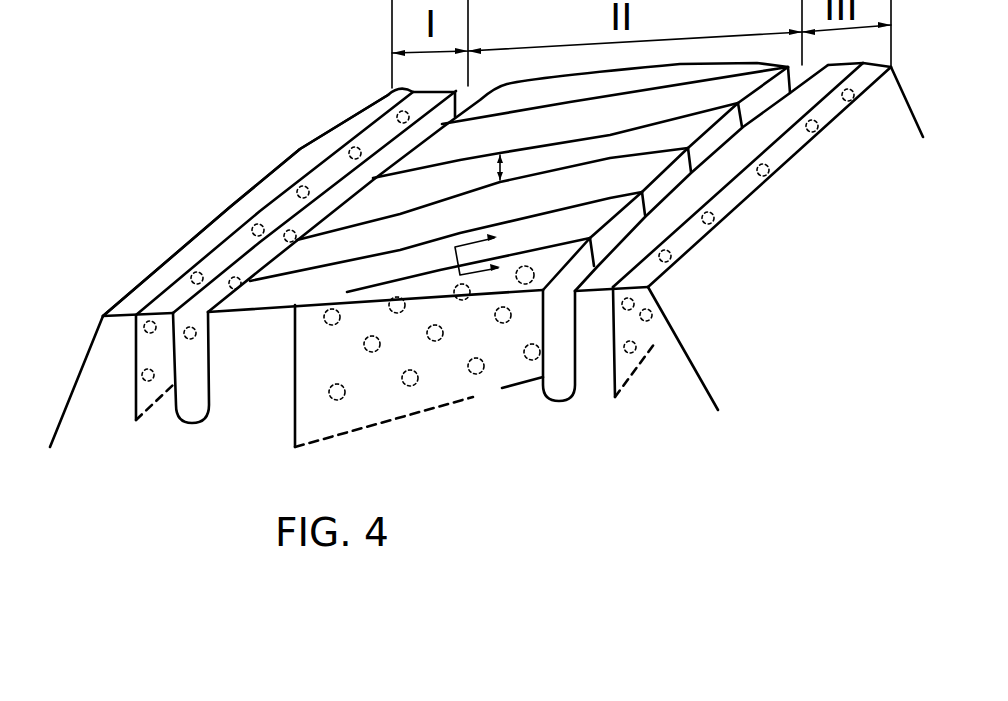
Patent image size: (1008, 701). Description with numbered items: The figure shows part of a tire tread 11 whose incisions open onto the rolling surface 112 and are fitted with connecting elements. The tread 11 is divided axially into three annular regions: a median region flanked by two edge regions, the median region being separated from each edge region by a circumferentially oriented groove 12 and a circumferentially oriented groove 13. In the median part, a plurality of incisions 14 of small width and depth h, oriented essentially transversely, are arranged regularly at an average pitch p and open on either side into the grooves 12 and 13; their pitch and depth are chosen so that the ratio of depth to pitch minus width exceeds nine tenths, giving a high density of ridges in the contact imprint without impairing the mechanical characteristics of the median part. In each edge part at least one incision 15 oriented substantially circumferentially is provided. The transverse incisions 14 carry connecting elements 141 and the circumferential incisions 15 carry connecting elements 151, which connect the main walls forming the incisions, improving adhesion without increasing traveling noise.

The tread 11 is at (723, 397).
The circumferentially oriented groove 12 is at (209, 422).
The circumferentially oriented groove 13 is at (575, 393).
The incision 14 is at (350, 292).
The connecting element 141 is at (345, 395).
The incision 15 is at (350, 136).
The connecting element 151 is at (204, 281).
The rolling surface 112 is at (468, 150).